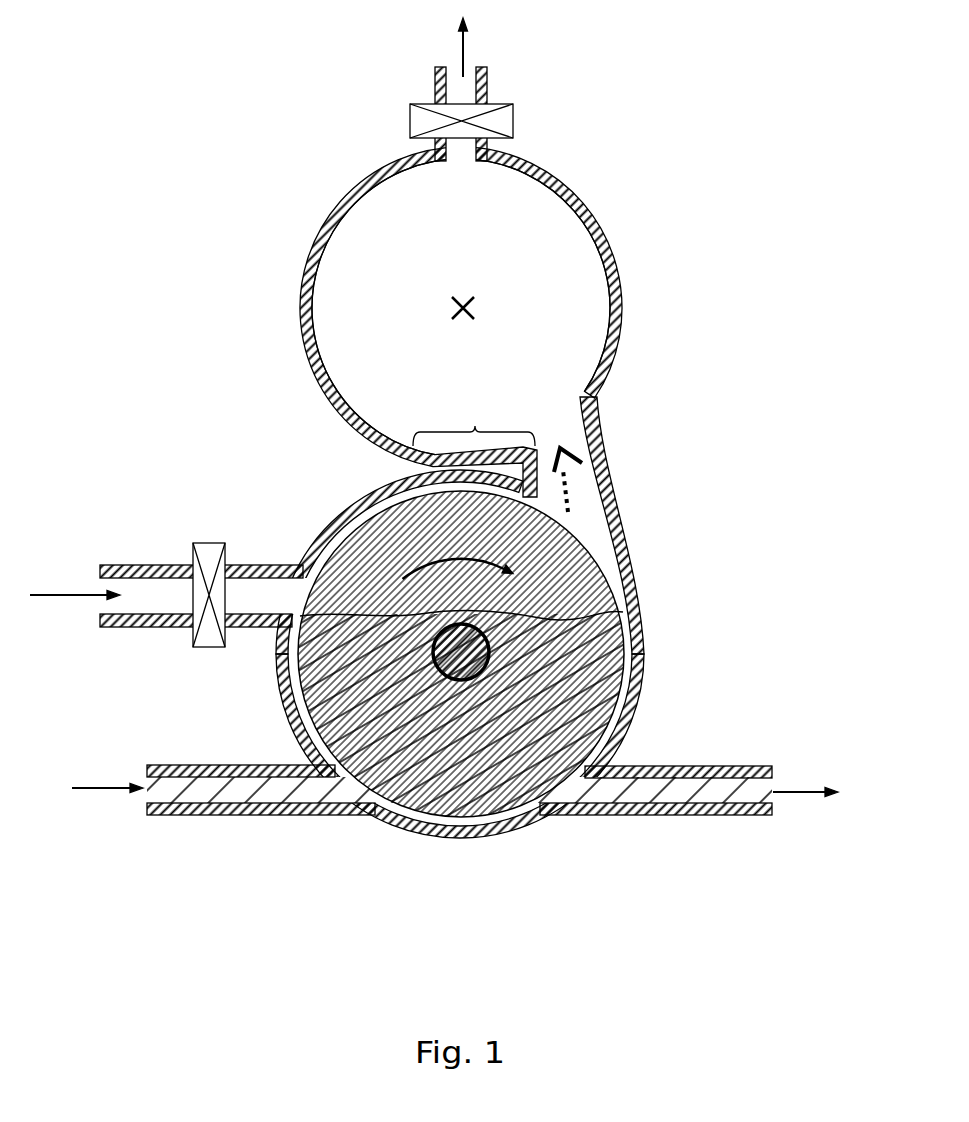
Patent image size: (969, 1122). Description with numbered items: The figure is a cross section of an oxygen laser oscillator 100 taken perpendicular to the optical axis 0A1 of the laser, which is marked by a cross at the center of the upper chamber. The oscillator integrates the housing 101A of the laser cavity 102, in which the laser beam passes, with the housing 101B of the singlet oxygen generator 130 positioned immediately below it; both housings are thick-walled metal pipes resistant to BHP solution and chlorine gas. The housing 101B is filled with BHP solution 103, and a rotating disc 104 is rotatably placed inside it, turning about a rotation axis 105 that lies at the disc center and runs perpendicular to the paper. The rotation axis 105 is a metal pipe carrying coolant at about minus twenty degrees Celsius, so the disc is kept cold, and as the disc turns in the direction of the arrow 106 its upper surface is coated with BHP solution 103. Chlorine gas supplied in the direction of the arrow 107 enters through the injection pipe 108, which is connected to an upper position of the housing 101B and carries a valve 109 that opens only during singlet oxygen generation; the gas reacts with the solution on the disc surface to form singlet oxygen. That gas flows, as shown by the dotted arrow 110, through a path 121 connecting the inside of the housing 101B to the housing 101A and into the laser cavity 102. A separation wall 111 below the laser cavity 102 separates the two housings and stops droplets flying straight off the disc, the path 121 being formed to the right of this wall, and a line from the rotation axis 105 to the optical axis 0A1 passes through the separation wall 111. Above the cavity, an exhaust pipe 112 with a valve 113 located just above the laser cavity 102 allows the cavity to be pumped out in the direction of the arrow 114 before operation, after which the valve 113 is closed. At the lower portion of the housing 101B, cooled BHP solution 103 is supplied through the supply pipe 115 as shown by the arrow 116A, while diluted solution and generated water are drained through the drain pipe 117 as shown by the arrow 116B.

The oxygen laser oscillator 100 is at (434, 463).
The housing of the laser cavity 101A is at (330, 230).
The housing of the SOG 101B is at (423, 661).
The laser cavity 102 is at (553, 265).
The optical axis 0A1 is at (477, 305).
The BHP solution 103 is at (362, 812).
The rotating disc 104 is at (547, 556).
The rotation axis 105 is at (490, 652).
The arrow 106 is at (380, 503).
The arrow 107 is at (57, 598).
The injection pipe 108 is at (137, 564).
The valve 109 is at (205, 548).
The dotted arrow 110 is at (576, 478).
The separation wall 111 is at (475, 426).
The exhaust pipe 112 is at (487, 82).
The valve 113 is at (505, 120).
The arrow 114 is at (470, 48).
The supply pipe 115 is at (220, 762).
The arrow 116A is at (100, 795).
The arrow 116B is at (808, 800).
The drain pipe 117 is at (700, 765).
The path 121 is at (578, 430).
The singlet oxygen generator (SOG) 130 is at (658, 573).